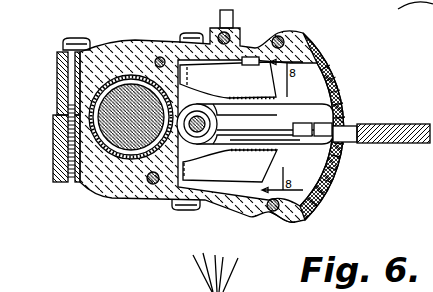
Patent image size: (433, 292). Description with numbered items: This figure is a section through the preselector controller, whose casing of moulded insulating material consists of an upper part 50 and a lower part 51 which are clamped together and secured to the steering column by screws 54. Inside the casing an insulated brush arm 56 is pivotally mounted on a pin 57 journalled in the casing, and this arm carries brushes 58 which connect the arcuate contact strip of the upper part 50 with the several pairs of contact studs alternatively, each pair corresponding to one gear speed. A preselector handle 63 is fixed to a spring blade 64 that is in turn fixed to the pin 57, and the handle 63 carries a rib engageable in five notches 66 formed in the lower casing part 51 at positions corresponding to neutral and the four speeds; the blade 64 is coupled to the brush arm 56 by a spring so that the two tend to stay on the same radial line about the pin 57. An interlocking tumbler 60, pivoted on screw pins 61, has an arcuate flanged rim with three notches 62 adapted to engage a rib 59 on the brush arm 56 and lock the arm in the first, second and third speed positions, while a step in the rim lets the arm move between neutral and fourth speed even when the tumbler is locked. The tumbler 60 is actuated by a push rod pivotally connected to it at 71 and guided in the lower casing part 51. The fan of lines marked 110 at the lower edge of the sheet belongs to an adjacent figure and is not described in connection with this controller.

The upper casing part 50 is at (131, 42).
The lower casing part 51 is at (310, 222).
The screws 54 is at (82, 40).
The brush arm 56 is at (318, 143).
The pin 57 is at (193, 128).
The brushes 58 is at (322, 123).
The rib 59 is at (304, 159).
The interlocking tumbler 60 is at (250, 178).
The screw pins 61 is at (60, 71).
The notches 62 is at (432, 200).
The preselector handle 63 is at (385, 124).
The spring blade 64 is at (291, 145).
The notches 66 is at (338, 80).
The pivotal connection 71 is at (250, 58).
The lines 110 is at (230, 278).